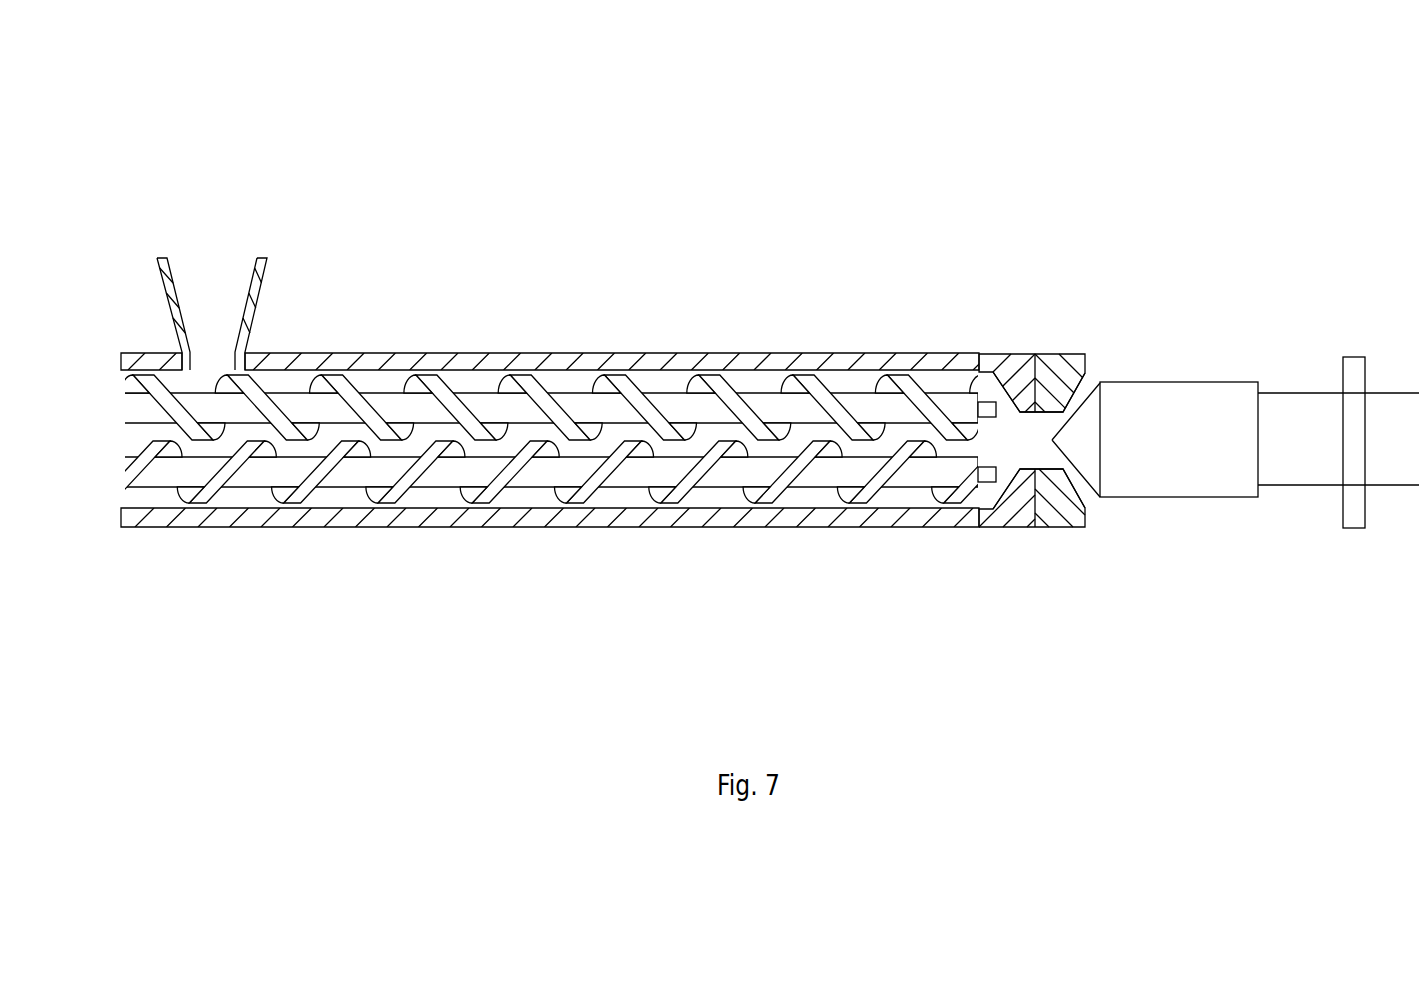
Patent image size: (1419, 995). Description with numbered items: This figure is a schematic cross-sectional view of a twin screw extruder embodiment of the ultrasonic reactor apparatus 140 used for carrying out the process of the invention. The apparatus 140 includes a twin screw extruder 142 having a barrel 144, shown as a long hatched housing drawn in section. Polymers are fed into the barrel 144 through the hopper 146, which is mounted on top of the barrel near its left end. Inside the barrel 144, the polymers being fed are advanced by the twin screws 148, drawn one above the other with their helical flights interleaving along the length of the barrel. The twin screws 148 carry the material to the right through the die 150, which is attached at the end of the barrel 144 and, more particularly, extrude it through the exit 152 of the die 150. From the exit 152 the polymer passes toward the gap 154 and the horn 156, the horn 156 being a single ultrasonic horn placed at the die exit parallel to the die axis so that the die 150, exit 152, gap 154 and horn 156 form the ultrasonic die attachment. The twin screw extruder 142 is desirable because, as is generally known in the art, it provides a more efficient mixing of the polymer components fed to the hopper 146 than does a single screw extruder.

The apparatus 140 is at (710, 342).
The twin screw extruder 142 is at (527, 493).
The barrel 144 is at (480, 358).
The hopper 146 is at (232, 305).
The twin screws 148 is at (353, 470).
The die 150 is at (1057, 510).
The exit 152 is at (1035, 440).
The gap 154 is at (1073, 402).
The horn 156 is at (1190, 472).